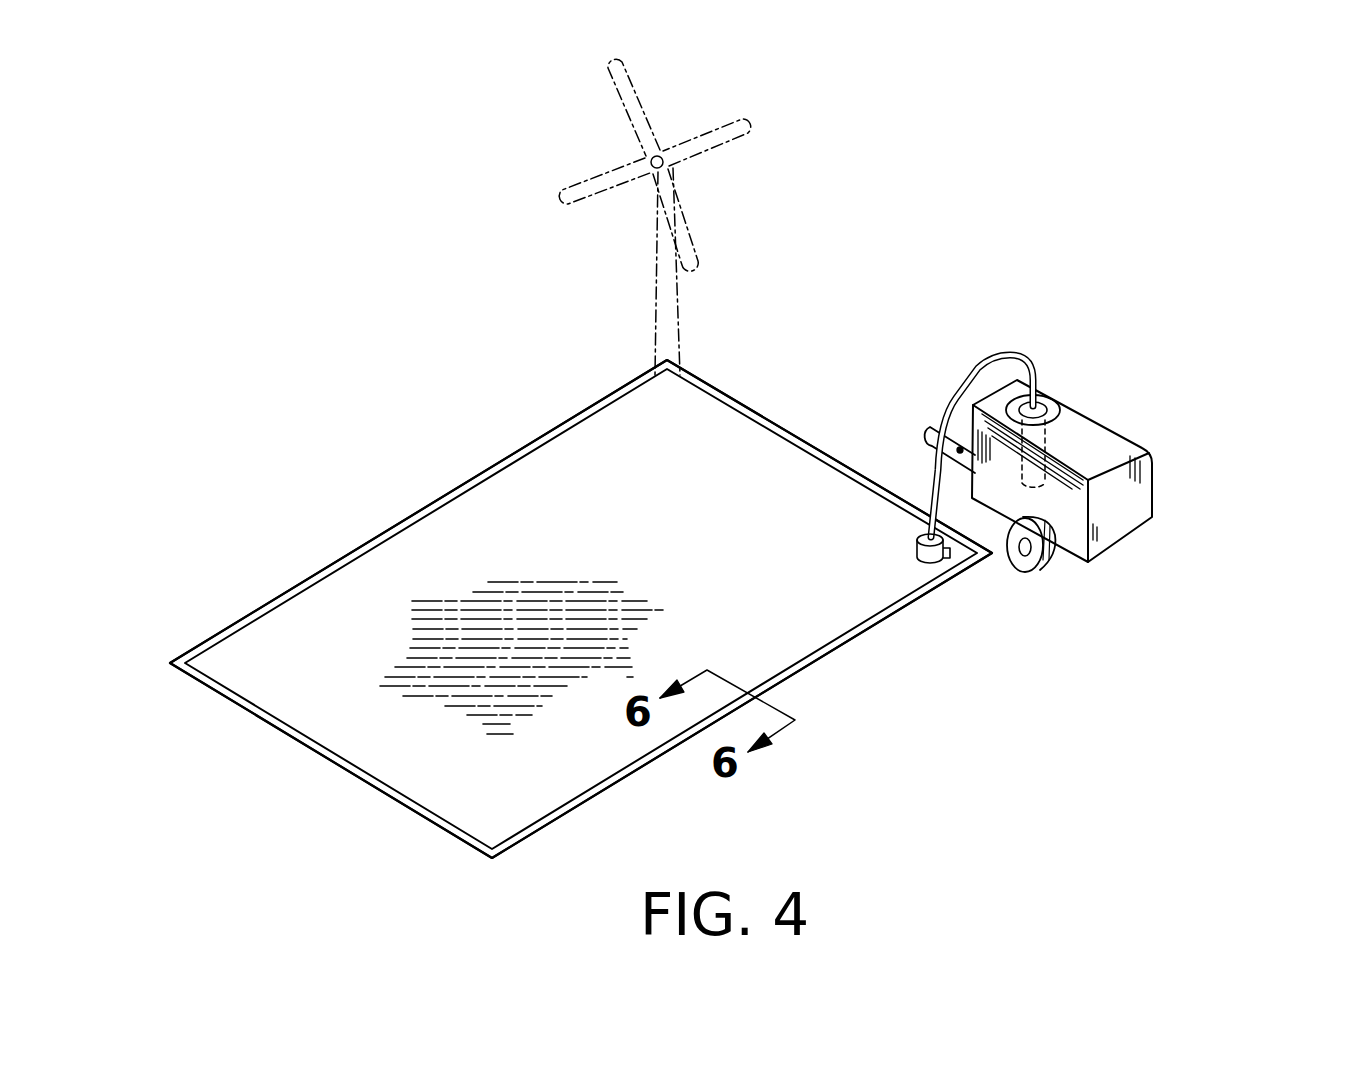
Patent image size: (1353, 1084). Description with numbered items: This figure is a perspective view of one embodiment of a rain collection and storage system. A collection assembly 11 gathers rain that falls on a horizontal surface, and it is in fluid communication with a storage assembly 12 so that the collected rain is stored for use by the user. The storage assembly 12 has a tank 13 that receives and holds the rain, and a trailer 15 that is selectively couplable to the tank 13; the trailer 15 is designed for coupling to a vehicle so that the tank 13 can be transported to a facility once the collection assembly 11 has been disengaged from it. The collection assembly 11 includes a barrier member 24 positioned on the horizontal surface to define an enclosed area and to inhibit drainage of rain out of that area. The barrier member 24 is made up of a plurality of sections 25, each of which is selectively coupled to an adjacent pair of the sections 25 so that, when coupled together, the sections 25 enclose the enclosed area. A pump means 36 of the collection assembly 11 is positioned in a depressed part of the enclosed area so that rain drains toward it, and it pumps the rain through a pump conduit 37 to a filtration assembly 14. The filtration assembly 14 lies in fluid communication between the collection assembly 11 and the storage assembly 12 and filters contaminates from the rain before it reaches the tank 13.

The collection assembly 11 is at (402, 835).
The storage assembly 12 is at (1110, 448).
The tank 13 is at (1137, 490).
The filtration assembly 14 is at (1047, 472).
The trailer 15 is at (1117, 545).
The barrier member 24 is at (832, 653).
The sections 25 is at (480, 474).
The pump means 36 is at (967, 563).
The pump conduit 37 is at (977, 365).